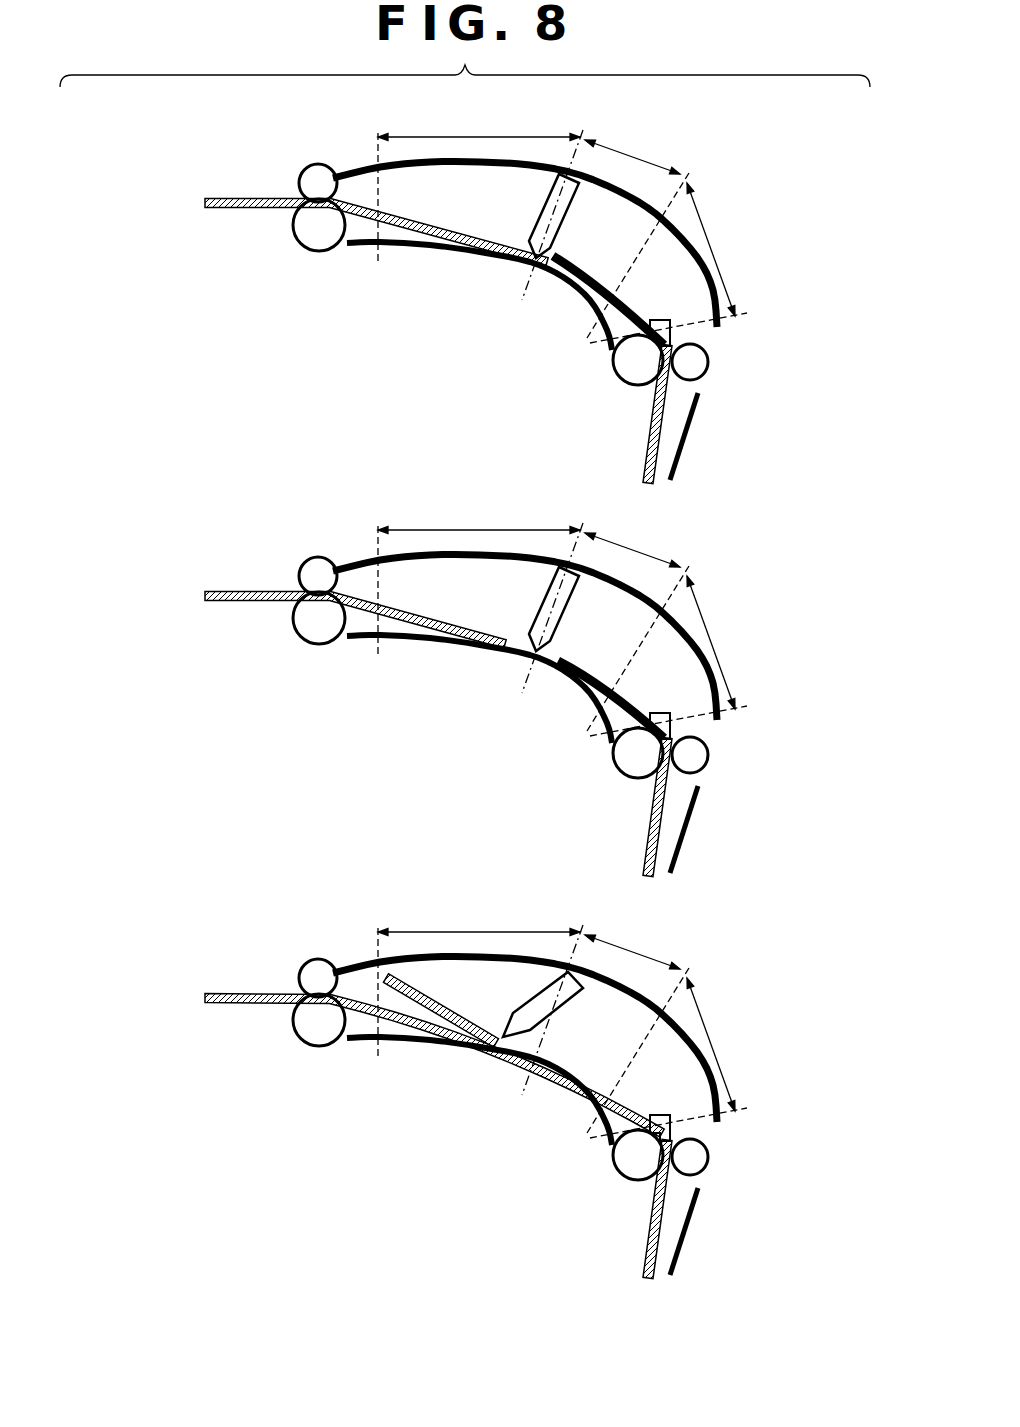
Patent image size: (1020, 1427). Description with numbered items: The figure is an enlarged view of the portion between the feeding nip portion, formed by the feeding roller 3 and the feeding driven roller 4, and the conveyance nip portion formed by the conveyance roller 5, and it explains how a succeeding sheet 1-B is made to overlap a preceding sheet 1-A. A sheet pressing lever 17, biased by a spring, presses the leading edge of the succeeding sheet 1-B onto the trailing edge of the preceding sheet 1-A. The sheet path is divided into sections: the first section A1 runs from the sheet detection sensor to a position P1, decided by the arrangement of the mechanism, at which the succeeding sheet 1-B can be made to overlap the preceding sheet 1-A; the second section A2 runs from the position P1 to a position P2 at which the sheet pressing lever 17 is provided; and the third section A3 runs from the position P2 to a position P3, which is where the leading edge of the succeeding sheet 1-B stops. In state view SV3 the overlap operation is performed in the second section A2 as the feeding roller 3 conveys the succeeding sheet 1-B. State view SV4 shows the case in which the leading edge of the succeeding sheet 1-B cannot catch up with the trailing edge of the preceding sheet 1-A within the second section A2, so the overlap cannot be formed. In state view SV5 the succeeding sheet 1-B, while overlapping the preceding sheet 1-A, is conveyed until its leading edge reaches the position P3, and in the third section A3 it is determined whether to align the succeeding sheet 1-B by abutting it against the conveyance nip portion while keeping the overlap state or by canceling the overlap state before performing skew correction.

The preceding sheet 1-A is at (410, 235).
The succeeding sheet 1-B is at (663, 413).
The feeding roller 3 is at (620, 377).
The feeding driven roller 4 is at (708, 366).
The conveyance roller 5 is at (330, 252).
The sheet pressing lever 17 is at (554, 186).
The position P1 is at (577, 740).
The position P2 is at (517, 708).
The position P3 is at (374, 676).
The first section A1 is at (731, 637).
The second section A2 is at (649, 540).
The third section A3 is at (562, 625).
The state view SV3 is at (232, 363).
The state view SV4 is at (232, 758).
The state view SV5 is at (232, 1153).